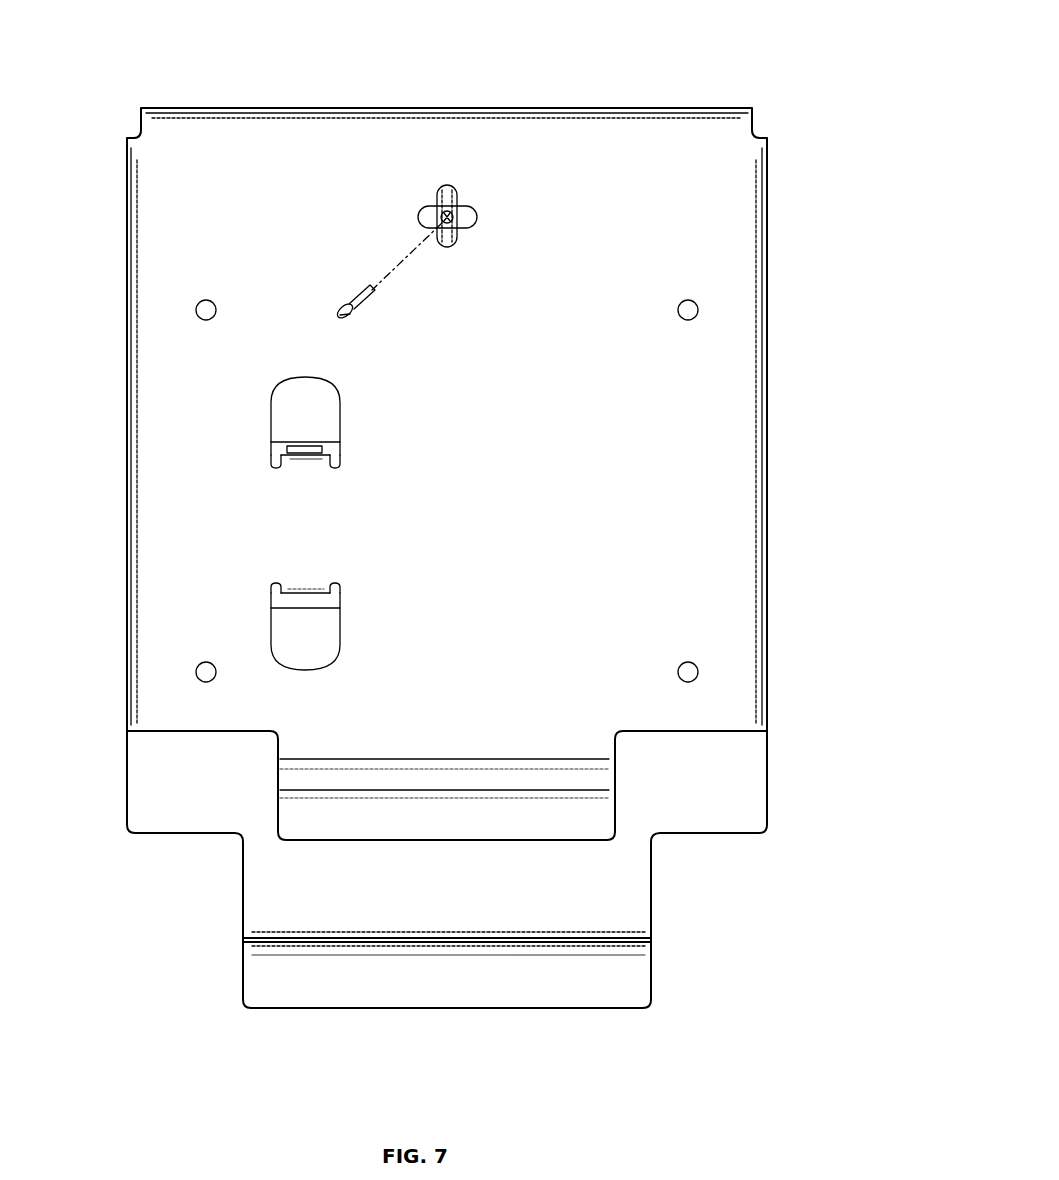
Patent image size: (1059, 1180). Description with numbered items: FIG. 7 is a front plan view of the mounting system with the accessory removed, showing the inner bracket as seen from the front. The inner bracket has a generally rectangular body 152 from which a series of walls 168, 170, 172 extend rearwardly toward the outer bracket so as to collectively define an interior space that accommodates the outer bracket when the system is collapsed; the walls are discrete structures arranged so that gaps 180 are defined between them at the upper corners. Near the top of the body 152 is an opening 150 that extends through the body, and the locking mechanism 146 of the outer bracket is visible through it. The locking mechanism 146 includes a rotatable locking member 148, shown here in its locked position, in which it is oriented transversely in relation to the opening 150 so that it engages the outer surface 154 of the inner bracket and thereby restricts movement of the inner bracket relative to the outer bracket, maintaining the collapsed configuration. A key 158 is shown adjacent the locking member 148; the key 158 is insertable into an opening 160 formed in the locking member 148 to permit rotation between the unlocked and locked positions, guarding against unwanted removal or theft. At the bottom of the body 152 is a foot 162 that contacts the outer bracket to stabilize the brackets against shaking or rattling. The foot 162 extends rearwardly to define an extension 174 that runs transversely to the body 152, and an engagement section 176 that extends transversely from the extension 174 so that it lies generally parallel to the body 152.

The locking mechanism 146 is at (468, 176).
The locking member 148 is at (435, 190).
The opening 150 is at (432, 213).
The body 152 is at (710, 265).
The outer surface 154 is at (570, 262).
The key 158 is at (365, 300).
The opening 160 is at (470, 225).
The foot 162 is at (647, 780).
The wall 168 is at (770, 462).
The wall 170 is at (266, 108).
The wall 172 is at (122, 432).
The extension 174 is at (622, 942).
The engagement section 176 is at (620, 990).
The gaps 180 is at (133, 128).